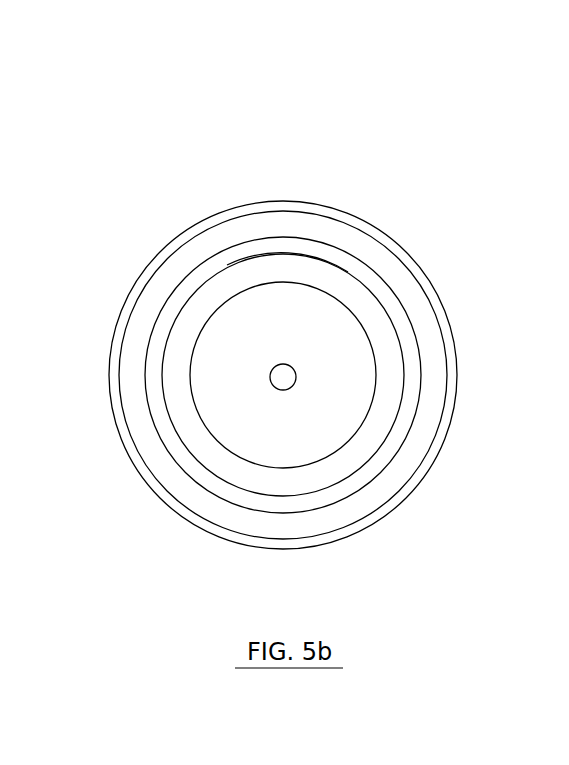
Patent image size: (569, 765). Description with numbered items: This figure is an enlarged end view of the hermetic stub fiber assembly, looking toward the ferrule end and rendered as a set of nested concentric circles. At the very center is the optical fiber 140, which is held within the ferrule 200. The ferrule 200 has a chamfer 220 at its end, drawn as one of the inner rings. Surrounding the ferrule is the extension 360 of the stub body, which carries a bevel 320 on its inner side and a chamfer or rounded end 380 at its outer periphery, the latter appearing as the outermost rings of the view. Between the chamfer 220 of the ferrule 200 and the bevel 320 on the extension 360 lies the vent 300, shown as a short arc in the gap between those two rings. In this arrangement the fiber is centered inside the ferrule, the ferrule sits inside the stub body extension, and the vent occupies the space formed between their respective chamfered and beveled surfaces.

The chamfer or rounded end 380 is at (118, 315).
The extension 360 is at (159, 285).
The bevel 320 is at (186, 290).
The vent 300 is at (280, 252).
The chamfer 220 is at (348, 288).
The ferrule 200 is at (335, 355).
The optical fiber 140 is at (289, 378).